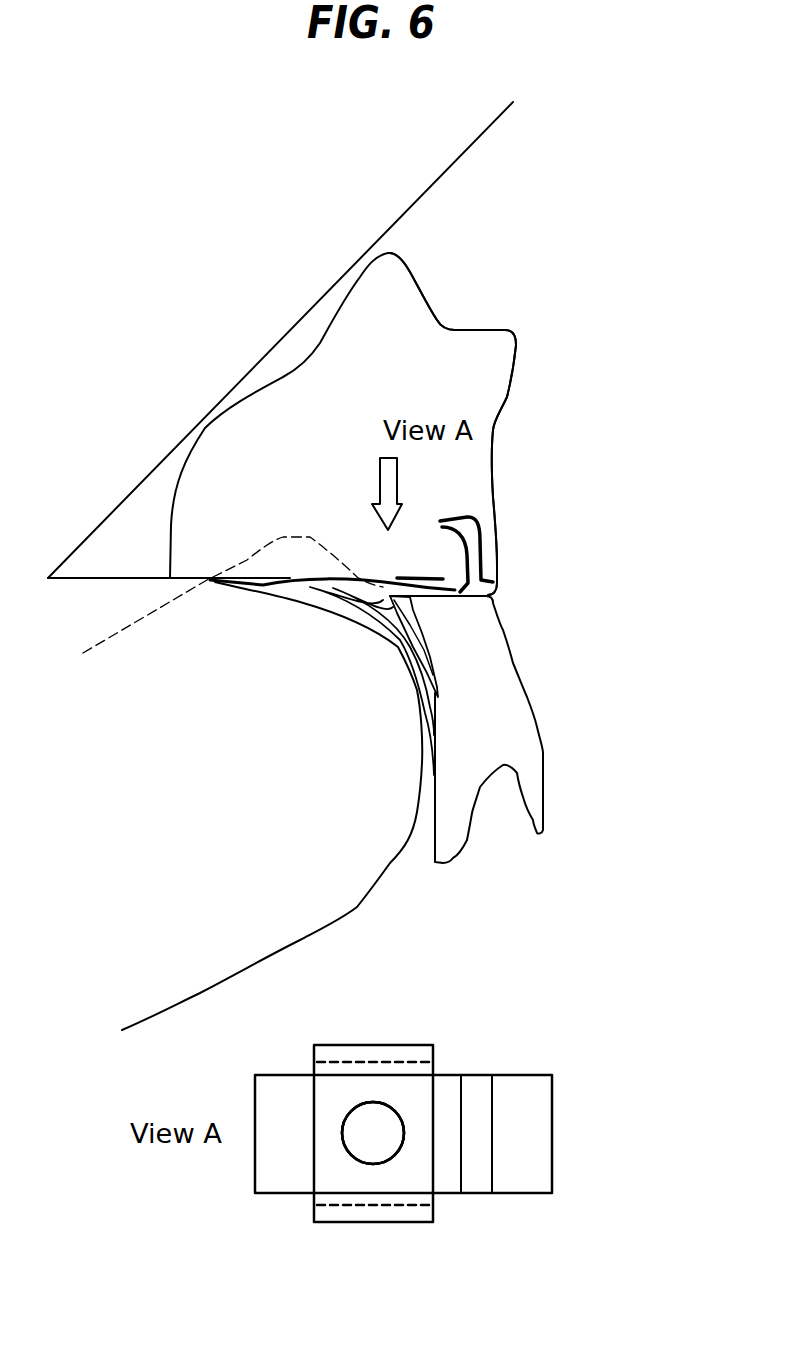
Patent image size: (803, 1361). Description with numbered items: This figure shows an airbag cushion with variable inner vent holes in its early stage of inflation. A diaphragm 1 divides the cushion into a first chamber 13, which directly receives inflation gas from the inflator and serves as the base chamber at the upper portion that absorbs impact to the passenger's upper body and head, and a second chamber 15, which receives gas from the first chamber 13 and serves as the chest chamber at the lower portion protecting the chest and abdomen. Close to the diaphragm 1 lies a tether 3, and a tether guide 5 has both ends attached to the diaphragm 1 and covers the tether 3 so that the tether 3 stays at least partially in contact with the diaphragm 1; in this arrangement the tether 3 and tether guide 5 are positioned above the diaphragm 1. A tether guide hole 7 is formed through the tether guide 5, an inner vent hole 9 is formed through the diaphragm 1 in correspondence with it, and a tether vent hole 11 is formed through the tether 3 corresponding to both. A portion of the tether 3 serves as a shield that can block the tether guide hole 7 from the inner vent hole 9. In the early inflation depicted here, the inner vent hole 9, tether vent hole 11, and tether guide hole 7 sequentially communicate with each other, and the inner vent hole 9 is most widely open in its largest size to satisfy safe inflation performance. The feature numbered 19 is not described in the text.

The diaphragm 1 is at (427, 643).
The tether 3 is at (625, 1145).
The tether guide 5 is at (420, 572).
The tether guide hole 7 is at (373, 1133).
The inner vent hole 9 is at (372, 1118).
The tether vent hole 11 is at (373, 1133).
The first chamber 13 is at (413, 345).
The second chamber 15 is at (475, 703).
The chin 19 is at (355, 908).